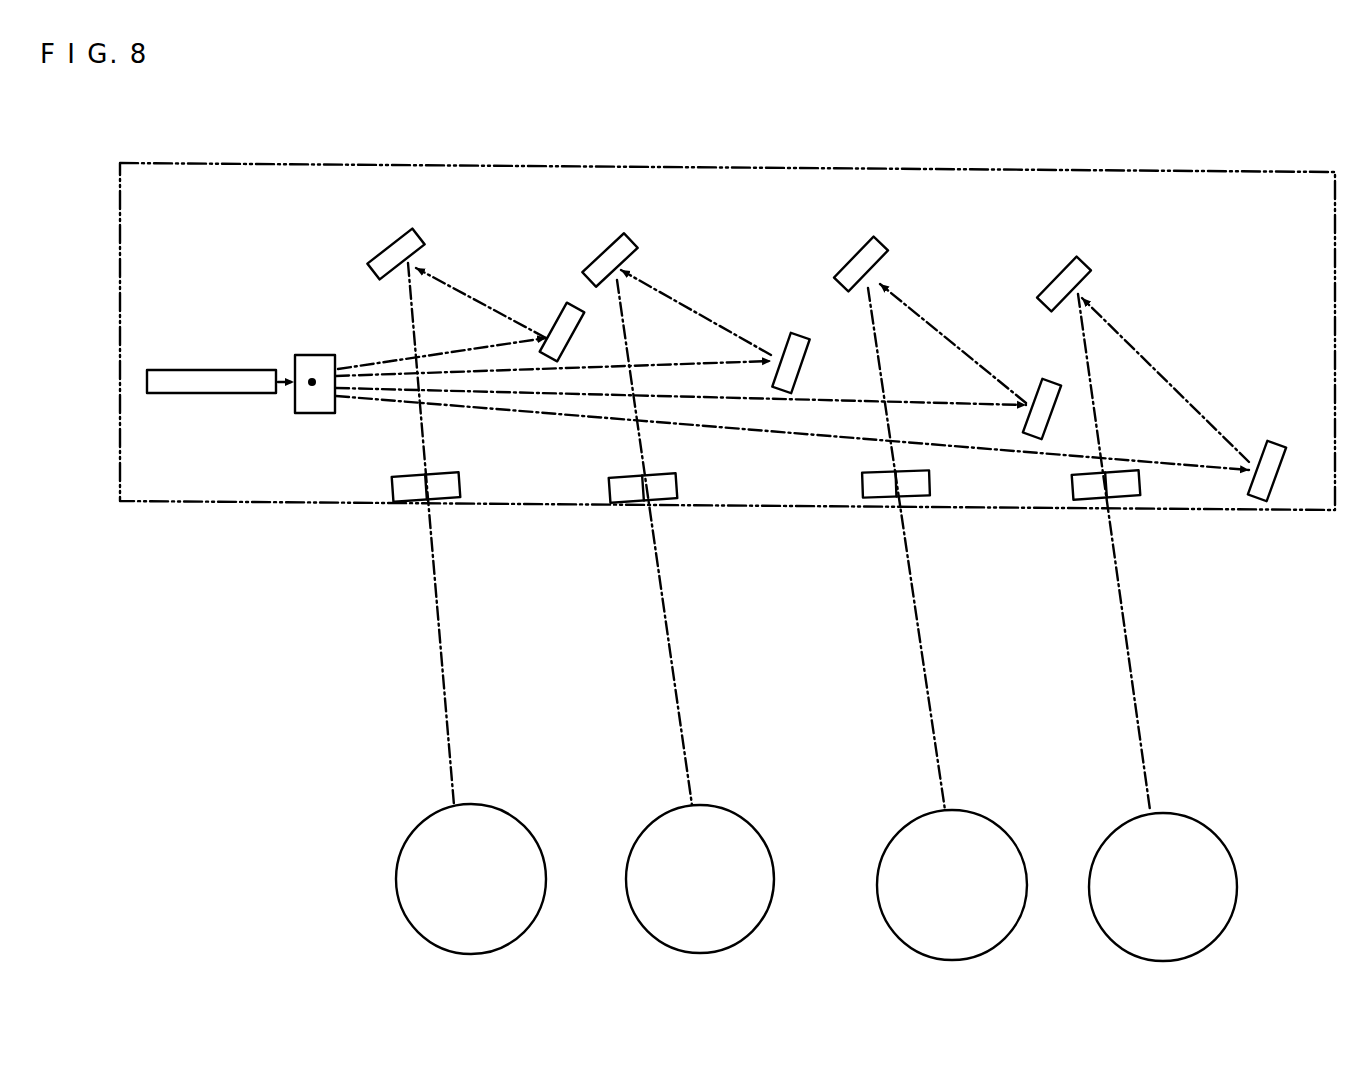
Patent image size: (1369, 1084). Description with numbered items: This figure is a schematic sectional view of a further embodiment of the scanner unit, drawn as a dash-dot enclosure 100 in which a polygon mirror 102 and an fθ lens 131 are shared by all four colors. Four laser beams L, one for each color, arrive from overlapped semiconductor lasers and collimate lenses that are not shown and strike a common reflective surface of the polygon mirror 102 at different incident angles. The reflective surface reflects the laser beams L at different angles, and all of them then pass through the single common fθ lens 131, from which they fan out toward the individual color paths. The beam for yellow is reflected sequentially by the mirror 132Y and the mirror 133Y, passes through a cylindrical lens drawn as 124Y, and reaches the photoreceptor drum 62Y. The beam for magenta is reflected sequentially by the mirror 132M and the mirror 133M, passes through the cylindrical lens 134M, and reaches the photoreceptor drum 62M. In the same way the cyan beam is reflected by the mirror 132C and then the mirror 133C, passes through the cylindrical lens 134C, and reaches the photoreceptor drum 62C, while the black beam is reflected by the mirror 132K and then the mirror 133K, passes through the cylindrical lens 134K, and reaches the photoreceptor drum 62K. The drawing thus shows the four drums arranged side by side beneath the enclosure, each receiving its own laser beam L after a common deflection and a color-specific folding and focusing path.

The optical scanning device 100 is at (404, 162).
The polygon mirror 102 is at (171, 380).
The fθ lens 131 is at (314, 356).
The mirror 132K is at (573, 303).
The mirror 132C is at (800, 337).
The mirror 132M is at (1032, 437).
The mirror 132Y is at (1267, 497).
The mirror 133K is at (418, 243).
The mirror 133C is at (627, 247).
The mirror 133M is at (882, 242).
The mirror 133Y is at (1083, 257).
The cylindrical lens 134K is at (393, 485).
The cylindrical lens 134C is at (657, 503).
The cylindrical lens 134M is at (862, 481).
The scanning lens (Y) 124Y is at (1123, 497).
The photoreceptor drum 62K is at (428, 820).
The photoreceptor drum 62C is at (705, 805).
The photoreceptor drum 62M is at (912, 822).
The photoreceptor drum 62Y is at (1178, 808).
The laser beams L is at (668, 656).